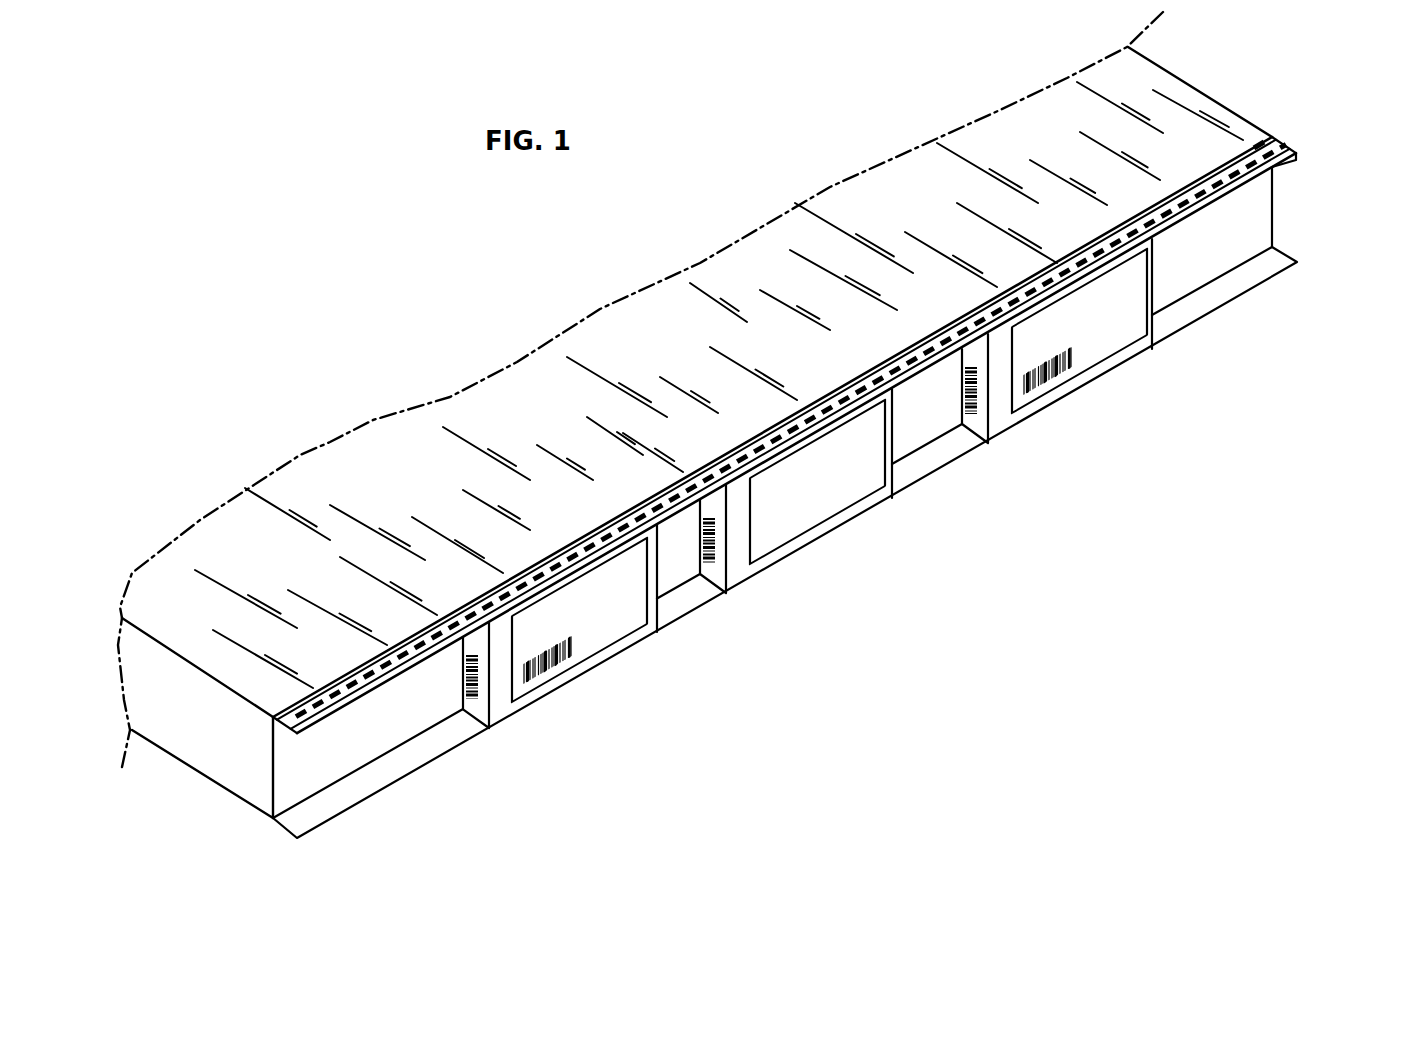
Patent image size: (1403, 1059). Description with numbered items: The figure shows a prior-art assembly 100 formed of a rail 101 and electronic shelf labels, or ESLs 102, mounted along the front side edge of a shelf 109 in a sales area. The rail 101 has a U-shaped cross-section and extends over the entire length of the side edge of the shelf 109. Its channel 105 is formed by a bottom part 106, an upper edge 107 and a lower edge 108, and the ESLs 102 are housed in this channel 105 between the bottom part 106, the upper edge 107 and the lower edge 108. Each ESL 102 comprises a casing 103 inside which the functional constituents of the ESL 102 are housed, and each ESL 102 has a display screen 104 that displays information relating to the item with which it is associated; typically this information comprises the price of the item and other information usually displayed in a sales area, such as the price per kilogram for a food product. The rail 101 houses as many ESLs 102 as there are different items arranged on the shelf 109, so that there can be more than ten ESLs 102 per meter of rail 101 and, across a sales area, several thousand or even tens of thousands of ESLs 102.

The assembly 100 is at (941, 543).
The rail 101 is at (1222, 177).
The ESLs 102 is at (513, 588).
The casing 103 is at (502, 672).
The display screen 104 is at (582, 627).
The channel 105 is at (1207, 255).
The bottom part 106 is at (1250, 213).
The upper edge 107 is at (1258, 162).
The lower edge 108 is at (1245, 268).
The shelf 109 is at (776, 272).